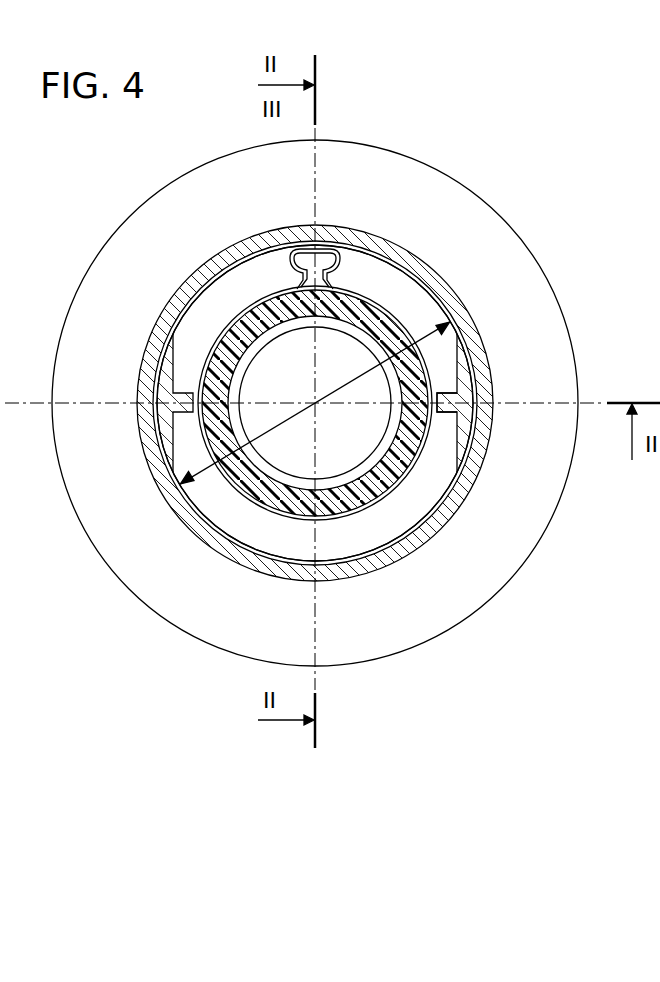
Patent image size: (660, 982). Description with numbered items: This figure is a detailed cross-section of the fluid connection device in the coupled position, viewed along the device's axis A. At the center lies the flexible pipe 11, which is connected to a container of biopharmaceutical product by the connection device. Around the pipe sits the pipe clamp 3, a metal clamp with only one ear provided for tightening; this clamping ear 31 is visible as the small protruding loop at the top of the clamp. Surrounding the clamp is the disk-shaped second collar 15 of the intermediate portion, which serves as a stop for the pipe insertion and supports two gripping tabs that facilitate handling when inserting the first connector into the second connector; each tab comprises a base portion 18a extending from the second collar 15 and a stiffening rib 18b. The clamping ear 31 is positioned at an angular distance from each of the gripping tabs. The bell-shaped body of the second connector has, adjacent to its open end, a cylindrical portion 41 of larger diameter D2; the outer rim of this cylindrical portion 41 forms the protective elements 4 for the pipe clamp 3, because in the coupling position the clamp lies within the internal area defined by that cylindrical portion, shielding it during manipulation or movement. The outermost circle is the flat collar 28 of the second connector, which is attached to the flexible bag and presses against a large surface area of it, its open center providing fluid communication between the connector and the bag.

The pipe clamp 3 is at (399, 322).
The protective elements 4 is at (210, 252).
The flexible pipe 11 is at (247, 482).
The second collar 15 is at (405, 512).
The base portion 18a is at (465, 376).
The stiffening rib 18b is at (443, 410).
The collar 28 is at (406, 620).
The clamping ear 31 is at (342, 262).
The cylindrical portion 41 is at (176, 313).
The axis A is at (305, 409).
The diameter D2 is at (314, 403).